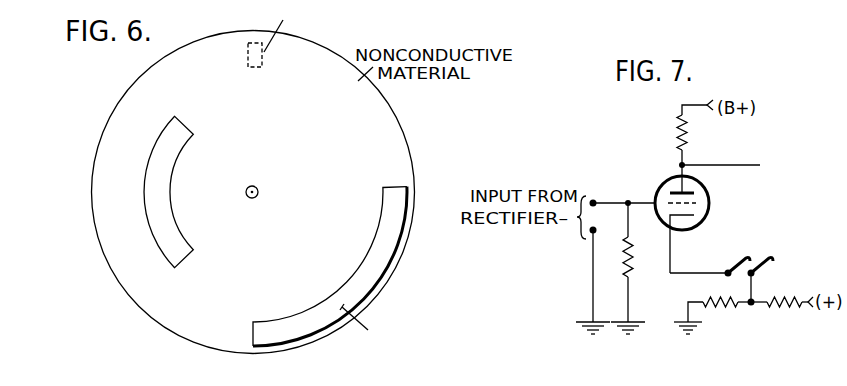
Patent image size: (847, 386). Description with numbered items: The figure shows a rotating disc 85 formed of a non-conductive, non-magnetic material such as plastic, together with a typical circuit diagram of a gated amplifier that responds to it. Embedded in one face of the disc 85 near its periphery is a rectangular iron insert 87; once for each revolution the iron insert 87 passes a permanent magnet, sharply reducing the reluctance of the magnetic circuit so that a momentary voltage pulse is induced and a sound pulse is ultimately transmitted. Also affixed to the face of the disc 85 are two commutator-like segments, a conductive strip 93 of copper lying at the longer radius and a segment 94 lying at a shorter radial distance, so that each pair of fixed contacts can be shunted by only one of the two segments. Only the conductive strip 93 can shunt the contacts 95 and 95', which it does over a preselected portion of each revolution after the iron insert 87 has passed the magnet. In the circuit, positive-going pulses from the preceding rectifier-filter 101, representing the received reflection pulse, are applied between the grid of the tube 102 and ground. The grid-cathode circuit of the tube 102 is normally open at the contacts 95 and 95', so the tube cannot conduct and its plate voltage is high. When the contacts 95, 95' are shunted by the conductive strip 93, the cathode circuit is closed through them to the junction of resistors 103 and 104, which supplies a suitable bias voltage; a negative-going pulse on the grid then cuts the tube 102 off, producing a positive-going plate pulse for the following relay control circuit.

In FIG. 6, the disc 85 is at (152, 320).
In FIG. 6, the iron insert 87 is at (262, 63).
In FIG. 6, the conductive strip 93 is at (305, 312).
In FIG. 6, the segment 94 is at (180, 228).
In FIG. 7, the rectifier-filter 101 is at (528, 222).
In FIG. 7, the tube 102 is at (707, 193).
In FIG. 7, the contact 95 is at (726, 260).
In FIG. 7, the contact 95' is at (769, 253).
In FIG. 7, the resistor 103 is at (727, 314).
In FIG. 7, the resistor 104 is at (784, 314).